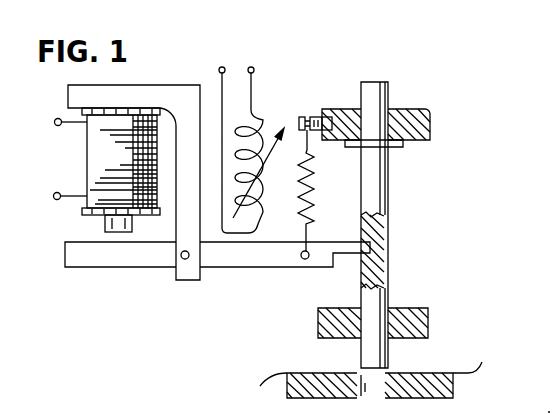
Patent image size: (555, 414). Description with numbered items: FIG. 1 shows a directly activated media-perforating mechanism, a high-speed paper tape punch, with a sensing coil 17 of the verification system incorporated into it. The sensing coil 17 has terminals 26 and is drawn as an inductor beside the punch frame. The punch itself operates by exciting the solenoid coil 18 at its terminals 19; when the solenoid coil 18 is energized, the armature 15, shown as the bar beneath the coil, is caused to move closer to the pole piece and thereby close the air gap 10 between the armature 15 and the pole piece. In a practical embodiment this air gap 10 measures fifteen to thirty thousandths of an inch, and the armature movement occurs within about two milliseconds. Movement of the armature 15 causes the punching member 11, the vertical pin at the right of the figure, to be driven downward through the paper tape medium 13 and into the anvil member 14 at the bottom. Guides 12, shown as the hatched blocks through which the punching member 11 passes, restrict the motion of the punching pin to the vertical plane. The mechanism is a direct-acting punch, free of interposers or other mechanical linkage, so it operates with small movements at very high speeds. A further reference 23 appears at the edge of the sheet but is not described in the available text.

The air gap 10 is at (100, 235).
The punching member 11 is at (361, 97).
The guides 12 is at (416, 118).
The paper tape medium 13 is at (466, 371).
The anvil member 14 is at (290, 387).
The armature 15 is at (103, 262).
The sensing coil 17 is at (258, 124).
The solenoid coil 18 is at (87, 155).
The terminals 19 is at (54, 121).
The lead 23 is at (533, 407).
The terminals 26 is at (223, 67).